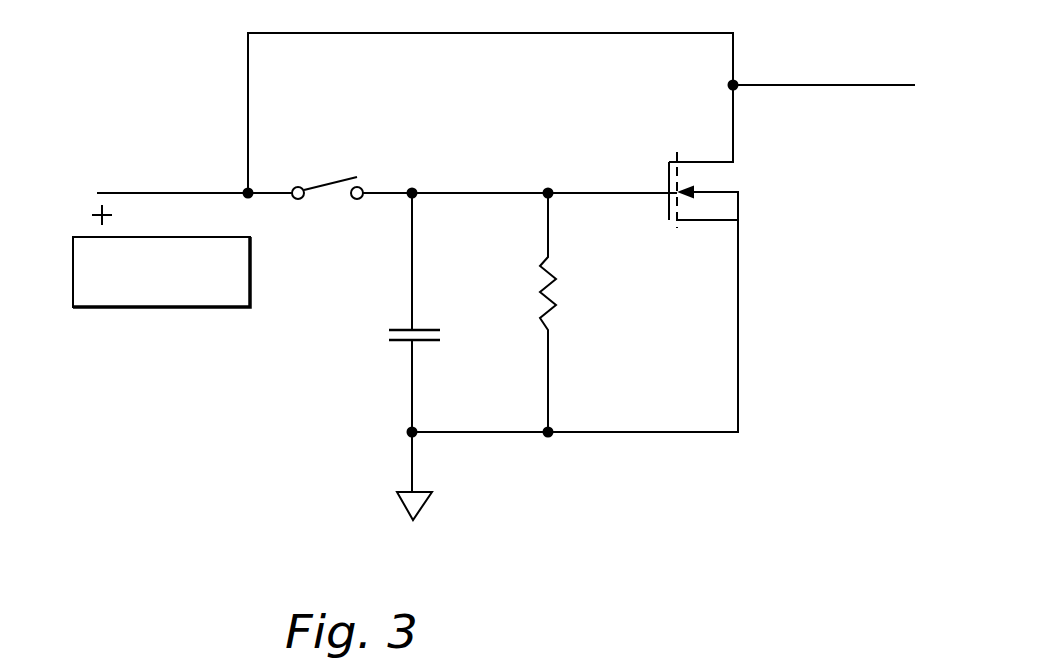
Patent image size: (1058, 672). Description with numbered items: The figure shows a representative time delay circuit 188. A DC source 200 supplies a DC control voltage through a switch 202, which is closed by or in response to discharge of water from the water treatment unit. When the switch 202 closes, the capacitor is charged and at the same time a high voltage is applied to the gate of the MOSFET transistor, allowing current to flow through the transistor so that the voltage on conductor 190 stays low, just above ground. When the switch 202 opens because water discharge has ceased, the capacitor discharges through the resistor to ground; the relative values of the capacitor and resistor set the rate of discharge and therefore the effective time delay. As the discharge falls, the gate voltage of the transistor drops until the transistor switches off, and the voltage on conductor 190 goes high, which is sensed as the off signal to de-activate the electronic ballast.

The time delay circuit 188 is at (514, 289).
The conductor 190 is at (825, 83).
The DC source 200 is at (250, 288).
The switch 202 is at (361, 188).